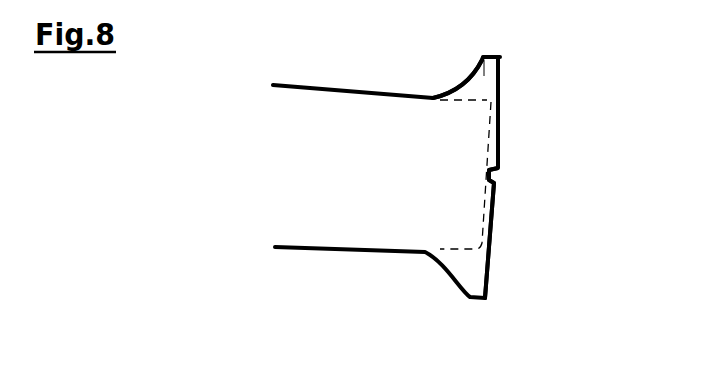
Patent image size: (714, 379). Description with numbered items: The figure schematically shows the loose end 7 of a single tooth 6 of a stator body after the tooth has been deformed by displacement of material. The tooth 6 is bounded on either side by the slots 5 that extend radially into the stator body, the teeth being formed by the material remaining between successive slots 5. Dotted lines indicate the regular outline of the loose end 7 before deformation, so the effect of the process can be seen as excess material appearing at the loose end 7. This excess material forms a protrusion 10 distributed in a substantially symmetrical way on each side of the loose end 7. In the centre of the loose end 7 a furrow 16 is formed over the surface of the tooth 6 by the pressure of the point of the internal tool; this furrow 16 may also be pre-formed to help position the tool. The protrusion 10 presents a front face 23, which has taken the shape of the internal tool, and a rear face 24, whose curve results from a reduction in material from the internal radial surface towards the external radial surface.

The slot 5 is at (374, 69).
The tooth 6 is at (400, 185).
The loose end 7 is at (471, 207).
The protrusion 10 is at (487, 78).
The furrow 16 is at (499, 180).
The front face 23 is at (499, 251).
The rear face 24 is at (467, 78).